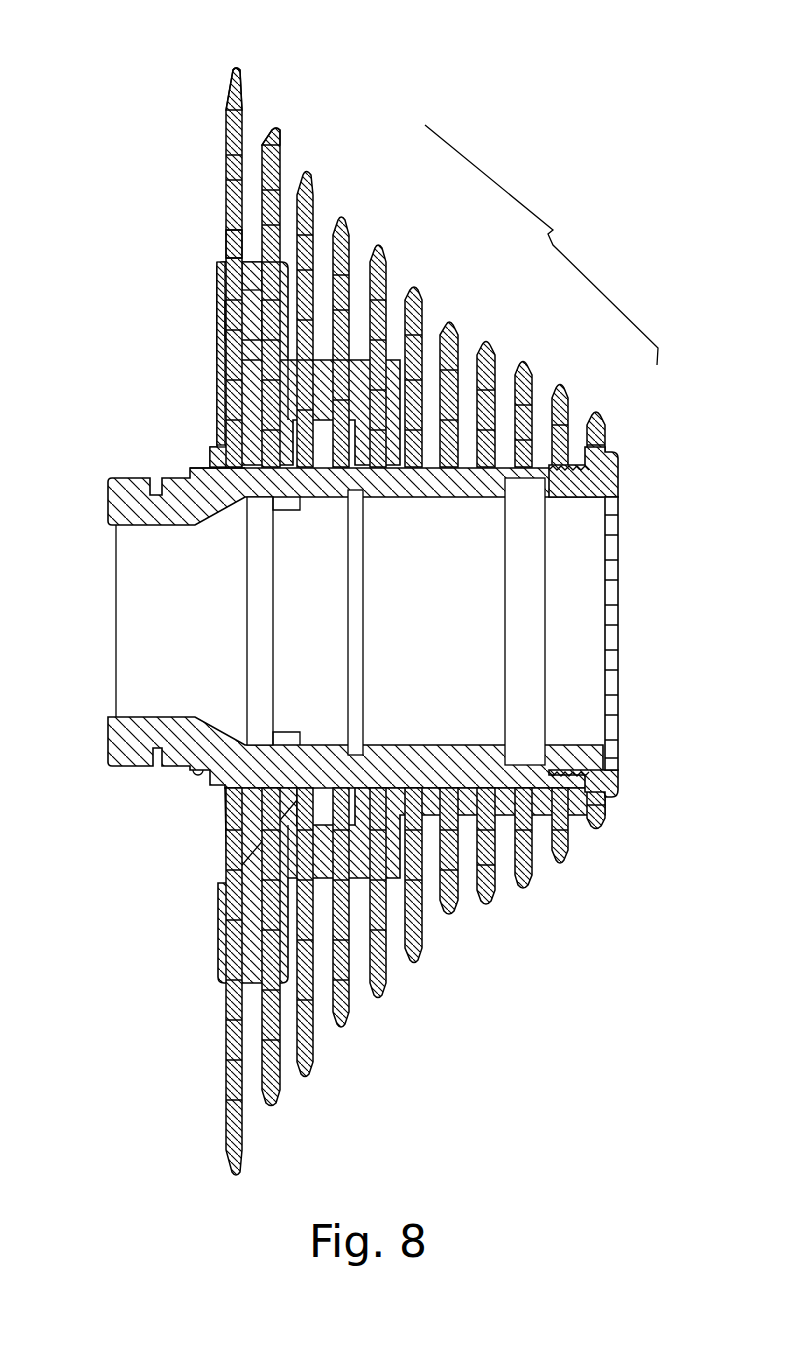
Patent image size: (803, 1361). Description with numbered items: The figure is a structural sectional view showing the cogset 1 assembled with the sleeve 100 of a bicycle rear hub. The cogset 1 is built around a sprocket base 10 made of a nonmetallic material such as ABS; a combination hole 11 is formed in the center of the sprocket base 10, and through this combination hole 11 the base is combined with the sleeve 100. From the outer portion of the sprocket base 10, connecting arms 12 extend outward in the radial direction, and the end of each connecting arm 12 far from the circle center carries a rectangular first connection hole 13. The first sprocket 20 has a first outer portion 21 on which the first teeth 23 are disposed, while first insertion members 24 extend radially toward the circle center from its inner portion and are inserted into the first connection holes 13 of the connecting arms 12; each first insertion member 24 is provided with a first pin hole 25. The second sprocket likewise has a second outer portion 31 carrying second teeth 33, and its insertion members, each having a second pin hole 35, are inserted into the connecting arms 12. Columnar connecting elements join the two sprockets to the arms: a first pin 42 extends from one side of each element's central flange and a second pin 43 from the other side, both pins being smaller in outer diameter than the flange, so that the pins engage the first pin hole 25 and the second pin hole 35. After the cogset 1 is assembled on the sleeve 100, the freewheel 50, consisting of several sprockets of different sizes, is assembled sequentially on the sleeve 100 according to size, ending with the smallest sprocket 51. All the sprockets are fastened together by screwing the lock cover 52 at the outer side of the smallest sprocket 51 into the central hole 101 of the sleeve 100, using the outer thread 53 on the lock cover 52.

The cogset 1 is at (116, 242).
The sprocket base 10 is at (232, 393).
The combination hole 11 is at (212, 466).
The connecting arm 12 is at (250, 262).
The first connection hole 13 is at (224, 264).
The first sprocket 20 is at (224, 183).
The first outer portion 21 is at (228, 63).
The first teeth 23 is at (238, 67).
The first insertion member 24 is at (230, 245).
The first pin hole 25 is at (218, 273).
The second outer portion 31 is at (277, 124).
The second teeth 33 is at (279, 136).
The second pin hole 35 is at (309, 250).
The first pin 42 is at (218, 313).
The second pin 43 is at (288, 330).
The freewheel 50 is at (514, 561).
The smallest sprocket 51 is at (598, 437).
The lock cover 52 is at (619, 476).
The outer thread 53 is at (616, 521).
The sleeve 100 is at (125, 505).
The central hole 101 is at (148, 632).